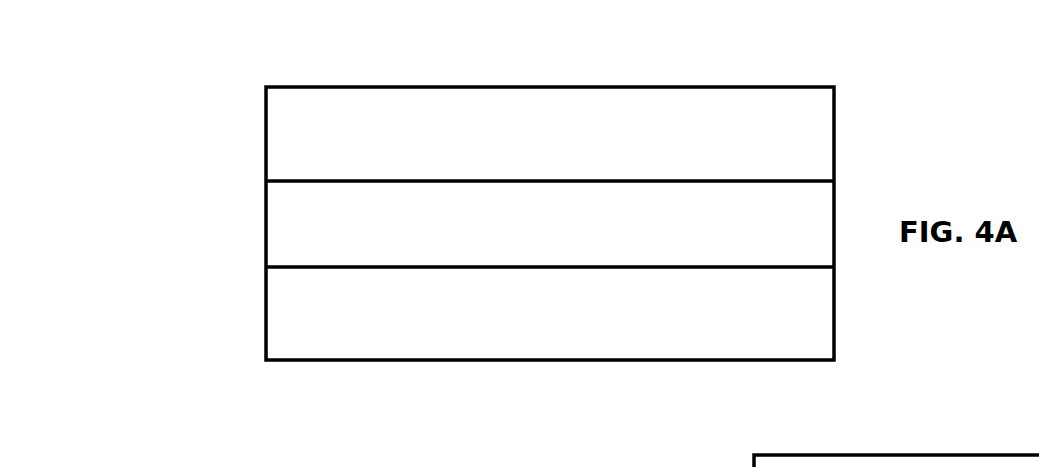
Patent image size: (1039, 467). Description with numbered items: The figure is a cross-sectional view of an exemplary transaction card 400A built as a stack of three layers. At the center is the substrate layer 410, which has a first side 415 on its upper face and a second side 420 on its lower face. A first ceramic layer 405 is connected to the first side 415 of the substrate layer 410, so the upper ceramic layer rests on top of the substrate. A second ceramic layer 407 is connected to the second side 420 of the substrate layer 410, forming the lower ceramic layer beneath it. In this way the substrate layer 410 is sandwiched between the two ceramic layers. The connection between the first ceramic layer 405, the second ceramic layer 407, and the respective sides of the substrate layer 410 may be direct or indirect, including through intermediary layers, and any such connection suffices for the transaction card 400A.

The transaction card 400A is at (249, 87).
The first ceramic layer 405 is at (260, 118).
The substrate layer 410 is at (260, 212).
The second ceramic layer 407 is at (263, 313).
The first side 415 is at (300, 190).
The second side 420 is at (399, 274).